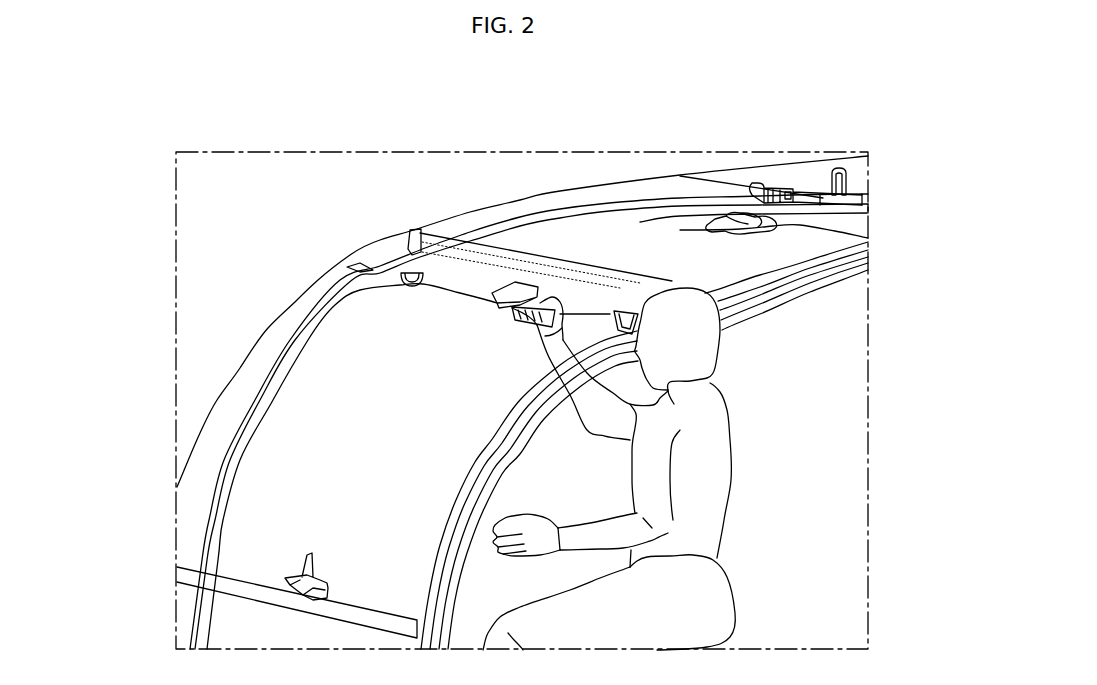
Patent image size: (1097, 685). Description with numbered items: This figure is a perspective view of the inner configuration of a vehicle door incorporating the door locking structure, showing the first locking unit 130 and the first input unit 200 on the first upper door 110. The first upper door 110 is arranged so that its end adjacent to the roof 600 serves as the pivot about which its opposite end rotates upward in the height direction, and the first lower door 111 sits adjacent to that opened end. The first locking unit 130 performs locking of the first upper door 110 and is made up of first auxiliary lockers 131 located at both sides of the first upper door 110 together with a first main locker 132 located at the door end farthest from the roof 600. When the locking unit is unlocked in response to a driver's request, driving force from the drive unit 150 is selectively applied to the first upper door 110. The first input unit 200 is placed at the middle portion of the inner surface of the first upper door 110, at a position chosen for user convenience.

The first upper door 110 is at (297, 302).
The first lower door 111 is at (187, 621).
The first locking unit 130 is at (108, 363).
The first auxiliary lockers 131 is at (618, 325).
The first main locker 132 is at (290, 577).
The drive unit 150 is at (820, 212).
The first input unit 200 is at (512, 282).
The roof 600 is at (845, 163).